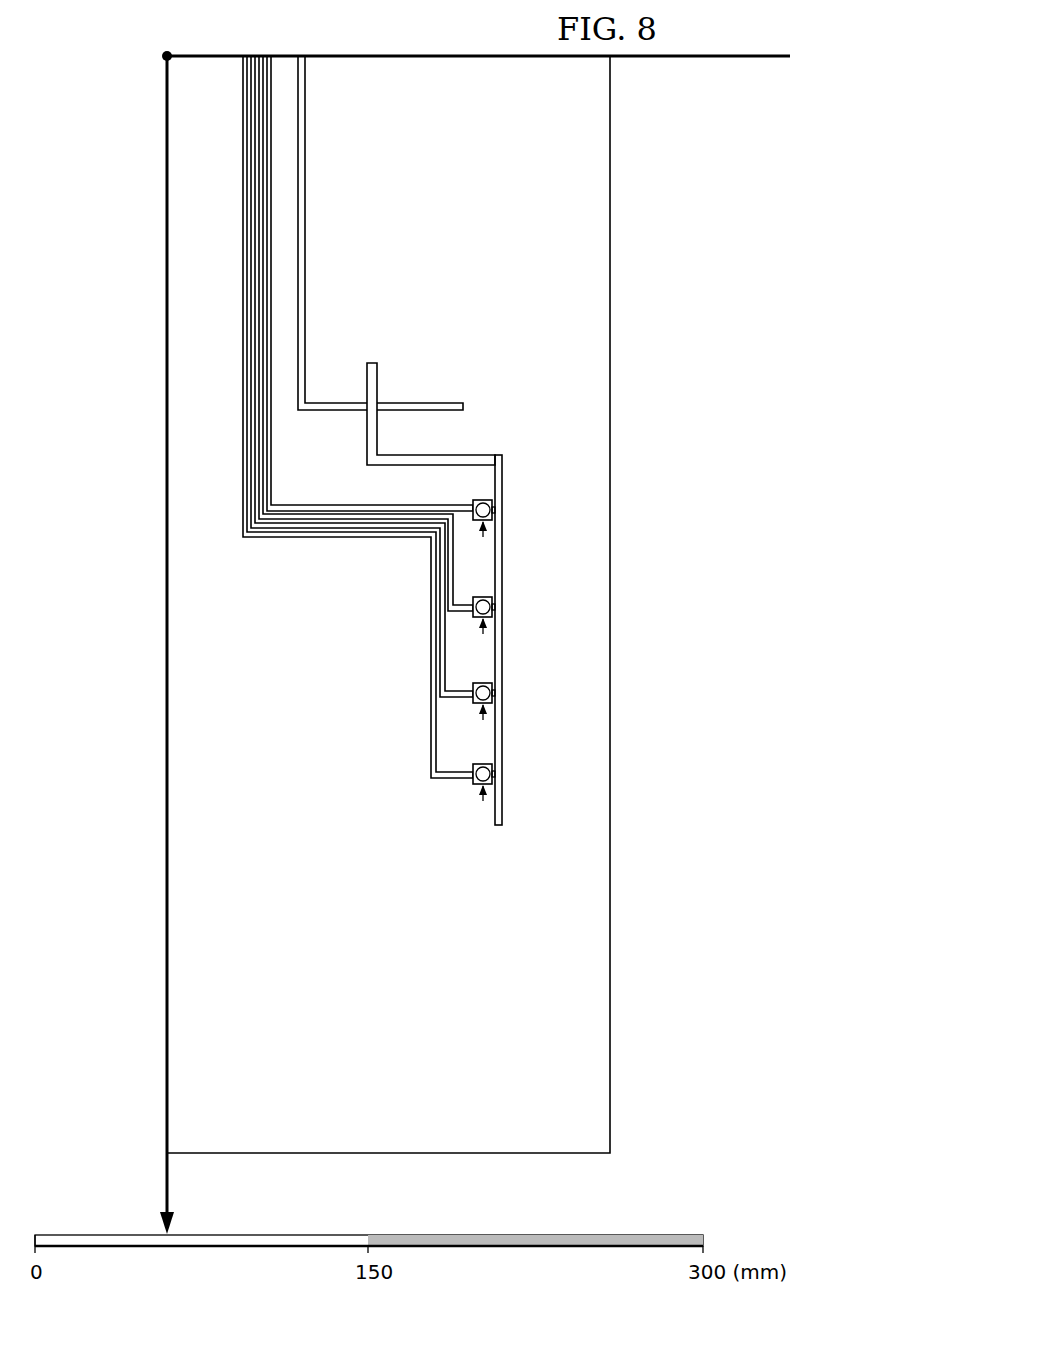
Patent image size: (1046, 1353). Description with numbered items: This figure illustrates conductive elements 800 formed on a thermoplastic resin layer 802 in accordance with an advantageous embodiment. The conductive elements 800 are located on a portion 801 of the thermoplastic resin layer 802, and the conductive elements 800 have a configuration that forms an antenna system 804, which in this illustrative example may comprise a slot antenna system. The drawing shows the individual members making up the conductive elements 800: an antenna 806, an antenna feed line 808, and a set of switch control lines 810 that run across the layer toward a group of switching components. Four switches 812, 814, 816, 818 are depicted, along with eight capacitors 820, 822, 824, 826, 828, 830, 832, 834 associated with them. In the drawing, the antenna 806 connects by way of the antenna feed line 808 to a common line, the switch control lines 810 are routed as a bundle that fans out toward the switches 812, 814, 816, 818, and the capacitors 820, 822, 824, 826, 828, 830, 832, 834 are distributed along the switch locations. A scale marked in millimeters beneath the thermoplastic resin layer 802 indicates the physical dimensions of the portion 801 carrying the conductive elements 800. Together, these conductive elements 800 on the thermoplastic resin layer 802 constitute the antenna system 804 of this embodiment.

The conductive elements 800 is at (530, 793).
The portion 801 is at (167, 748).
The thermoplastic resin layer 802 is at (607, 963).
The antenna system 804 is at (489, 254).
The antenna 806 is at (378, 384).
The antenna feed line 808 is at (306, 232).
The switch control lines 810 is at (323, 417).
The switch 812 is at (485, 547).
The switch 814 is at (485, 644).
The switch 816 is at (485, 730).
The switch 818 is at (483, 802).
The capacitor 820 is at (490, 500).
The capacitor 822 is at (449, 540).
The capacitor 824 is at (490, 597).
The capacitor 826 is at (442, 620).
The capacitor 828 is at (490, 683).
The capacitor 830 is at (434, 710).
The capacitor 832 is at (490, 764).
The capacitor 834 is at (473, 783).